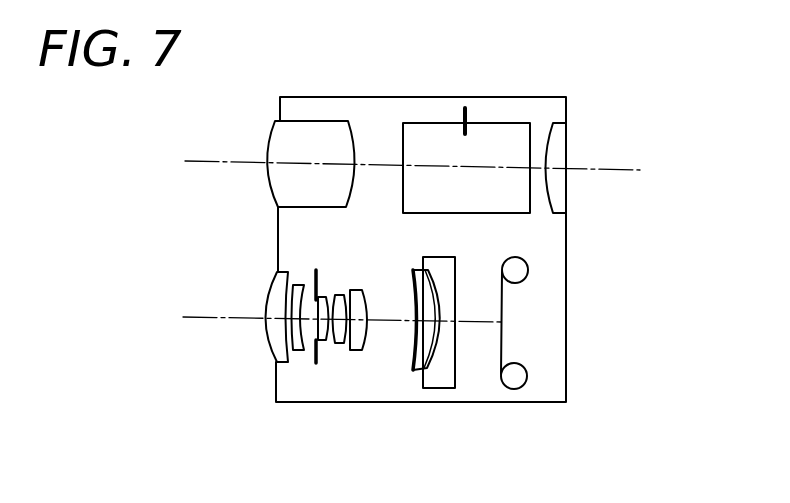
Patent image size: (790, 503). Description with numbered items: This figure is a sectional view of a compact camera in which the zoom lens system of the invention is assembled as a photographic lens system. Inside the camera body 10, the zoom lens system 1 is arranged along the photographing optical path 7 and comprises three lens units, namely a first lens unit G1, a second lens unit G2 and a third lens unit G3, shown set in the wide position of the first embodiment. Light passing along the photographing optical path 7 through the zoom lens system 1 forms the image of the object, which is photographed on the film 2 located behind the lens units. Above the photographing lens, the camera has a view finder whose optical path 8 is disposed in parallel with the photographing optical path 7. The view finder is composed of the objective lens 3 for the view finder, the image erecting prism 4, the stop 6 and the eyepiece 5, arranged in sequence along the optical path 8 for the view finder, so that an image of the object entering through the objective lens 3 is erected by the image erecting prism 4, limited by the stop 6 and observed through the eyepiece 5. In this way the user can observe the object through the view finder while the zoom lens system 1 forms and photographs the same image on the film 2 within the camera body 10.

The zoom lens system 1 is at (361, 360).
The film 2 is at (497, 360).
The objective lens for a view finder 3 is at (316, 121).
The image erecting prism 4 is at (512, 123).
The eyepiece 5 is at (561, 146).
The stop 6 is at (466, 118).
The photographing optical path 7 is at (222, 322).
The optical path for the view finder 8 is at (227, 165).
The camera body 10 is at (566, 336).
The first lens unit G1 is at (286, 335).
The second lens unit G2 is at (342, 344).
The third lens unit G3 is at (424, 329).